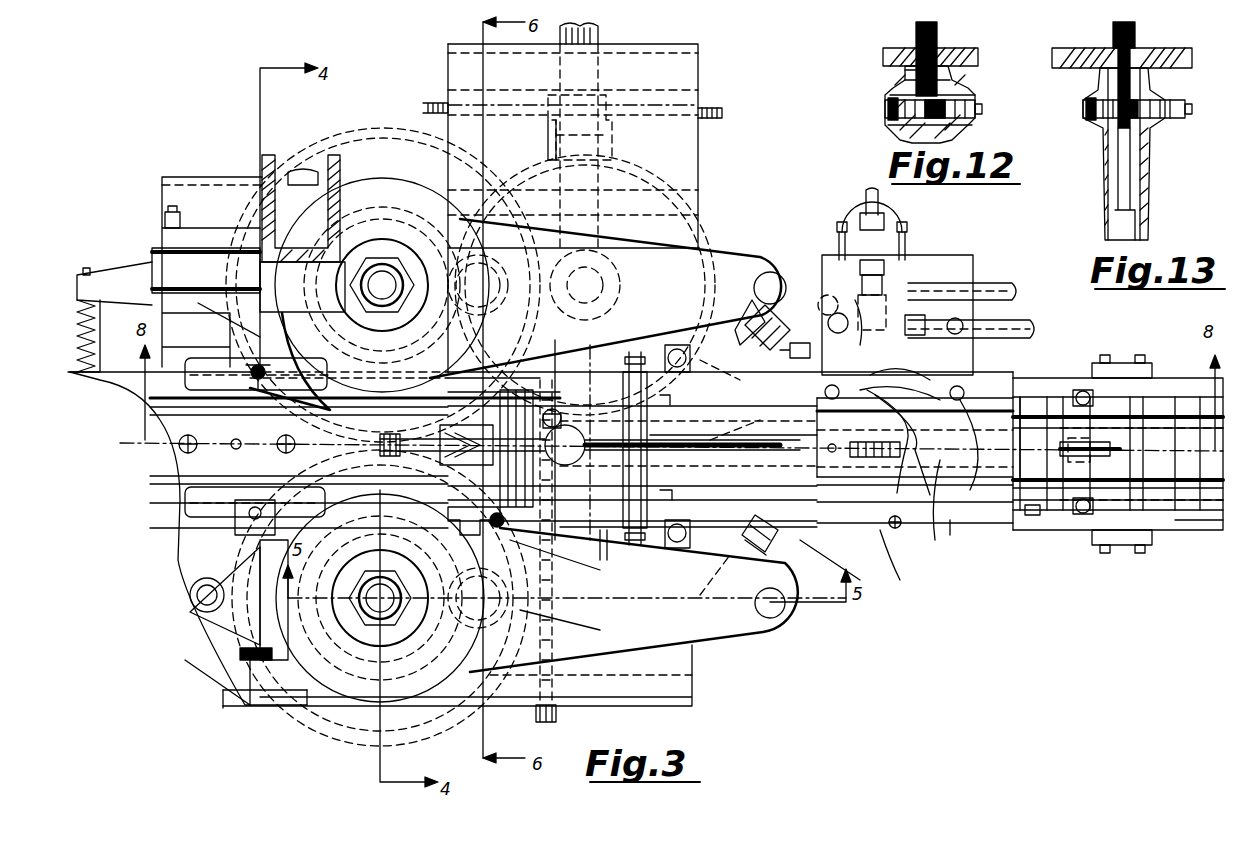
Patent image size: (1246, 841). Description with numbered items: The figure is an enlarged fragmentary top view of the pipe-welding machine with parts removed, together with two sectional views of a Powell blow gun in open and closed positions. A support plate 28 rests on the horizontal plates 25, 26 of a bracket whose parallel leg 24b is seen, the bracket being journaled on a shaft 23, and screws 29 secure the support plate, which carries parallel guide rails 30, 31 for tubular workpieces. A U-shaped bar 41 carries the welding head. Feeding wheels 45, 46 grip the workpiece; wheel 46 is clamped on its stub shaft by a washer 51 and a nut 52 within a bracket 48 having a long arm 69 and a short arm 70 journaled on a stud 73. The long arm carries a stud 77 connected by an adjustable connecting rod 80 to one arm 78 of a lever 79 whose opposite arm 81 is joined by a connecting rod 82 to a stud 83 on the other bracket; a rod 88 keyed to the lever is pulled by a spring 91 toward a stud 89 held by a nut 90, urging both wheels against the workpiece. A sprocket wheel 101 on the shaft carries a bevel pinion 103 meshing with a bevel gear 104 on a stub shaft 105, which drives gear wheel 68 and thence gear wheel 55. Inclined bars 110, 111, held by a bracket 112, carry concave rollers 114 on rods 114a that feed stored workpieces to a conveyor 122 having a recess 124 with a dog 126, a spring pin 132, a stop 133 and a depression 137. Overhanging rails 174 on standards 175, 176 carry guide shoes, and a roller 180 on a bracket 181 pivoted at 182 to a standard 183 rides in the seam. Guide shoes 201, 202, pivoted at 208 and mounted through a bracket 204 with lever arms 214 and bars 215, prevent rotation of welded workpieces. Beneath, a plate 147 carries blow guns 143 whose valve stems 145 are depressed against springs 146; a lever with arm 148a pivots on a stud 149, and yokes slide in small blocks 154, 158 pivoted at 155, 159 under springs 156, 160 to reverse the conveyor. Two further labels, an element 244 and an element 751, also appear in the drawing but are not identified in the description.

In FIG. 3, the shaft 23 is at (595, 34).
In FIG. 3, the horizontal plate 25 is at (698, 48).
In FIG. 3, the parallel leg 24b is at (686, 72).
In FIG. 3, the sprocket wheel 101 is at (722, 113).
In FIG. 3, the bevel pinion 103 is at (630, 148).
In FIG. 3, the bevel gear 104 is at (728, 215).
In FIG. 3, the gear wheel 68 is at (342, 132).
In FIG. 3, the feeding wheel 45 is at (375, 190).
In FIG. 3, the washer 51 is at (428, 250).
In FIG. 3, the nut 52 is at (400, 312).
In FIG. 3, the U-shaped bar 41 is at (302, 233).
In FIG. 3, the lever arm 214 is at (125, 270).
In FIG. 3, the bar 215 is at (90, 345).
In FIG. 3, the guide shoe 201 is at (210, 380).
In FIG. 3, the pivot 208 is at (300, 400).
In FIG. 3, the screws 29 is at (190, 452).
In FIG. 3, the guide shoe 202 is at (240, 500).
In FIG. 3, the support plate 28 is at (172, 478).
In FIG. 3, the bracket 204 is at (180, 558).
In FIG. 3, the bracket 181 is at (370, 455).
In FIG. 3, the roller 180 is at (420, 455).
In FIG. 3, the pivot 182 is at (518, 525).
In FIG. 3, the standard 183 is at (545, 383).
In FIG. 3, the rails 174 is at (660, 430).
In FIG. 3, the stub shaft 105 is at (590, 285).
In FIG. 3, the connecting rod 82 is at (780, 262).
In FIG. 3, the stud 83 is at (770, 272).
In FIG. 3, the Powell blow gun 143 is at (830, 300).
In FIG. 3, the spring 156 is at (855, 240).
In FIG. 3, the pivot 155 is at (870, 260).
In FIG. 3, the small block 154 is at (880, 268).
In FIG. 3, the stop 133 is at (870, 300).
In FIG. 3, the plate 147 is at (973, 275).
In FIG. 12, the plate 147 is at (1052, 56).
In FIG. 3, the rods 244 is at (1000, 326).
In FIG. 3, the lever arm 78 is at (712, 392).
In FIG. 3, the link 751 is at (820, 360).
In FIG. 3, the pin 132 is at (877, 339).
In FIG. 3, the spring 160 is at (953, 342).
In FIG. 3, the pivot 159 is at (921, 374).
In FIG. 3, the small block 158 is at (916, 392).
In FIG. 3, the lever arm 148a is at (942, 442).
In FIG. 3, the stud 149 is at (918, 451).
In FIG. 3, the guide rail 30 is at (1025, 380).
In FIG. 3, the bar 111 is at (1060, 380).
In FIG. 3, the dog 126 is at (1120, 440).
In FIG. 3, the bar 110 is at (1090, 520).
In FIG. 3, the bracket 112 is at (1150, 545).
In FIG. 3, the concave roller 114 is at (1110, 555).
In FIG. 3, the rod 114a is at (1030, 520).
In FIG. 3, the recess 124 is at (1165, 520).
In FIG. 3, the standard 176 is at (911, 514).
In FIG. 3, the guide rail 31 is at (930, 545).
In FIG. 3, the conveyor 122 is at (970, 490).
In FIG. 3, the depression 137 is at (950, 530).
In FIG. 3, the feeding wheel 46 is at (355, 700).
In FIG. 3, the short arm 70 is at (412, 690).
In FIG. 3, the gear wheel 55 is at (325, 748).
In FIG. 3, the stud 73 is at (550, 612).
In FIG. 3, the nut 90 is at (560, 715).
In FIG. 3, the long arm 69 is at (668, 640).
In FIG. 3, the stud 77 is at (790, 620).
In FIG. 3, the bracket 48 is at (740, 635).
In FIG. 3, the connecting rod 80 is at (775, 560).
In FIG. 3, the standard 175 is at (648, 555).
In FIG. 3, the spring 91 is at (575, 563).
In FIG. 3, the stud 89 is at (582, 626).
In FIG. 3, the rod 88 is at (697, 539).
In FIG. 3, the lever 79 is at (835, 530).
In FIG. 3, the lever arm 81 is at (880, 540).
In FIG. 3, the horizontal plate 26 is at (280, 705).
In FIG. 12, the valve stem 145 is at (948, 98).
In FIG. 13, the valve stem 145 is at (1170, 102).
In FIG. 12, the spring 146 is at (950, 118).
In FIG. 13, the spring 146 is at (1150, 122).